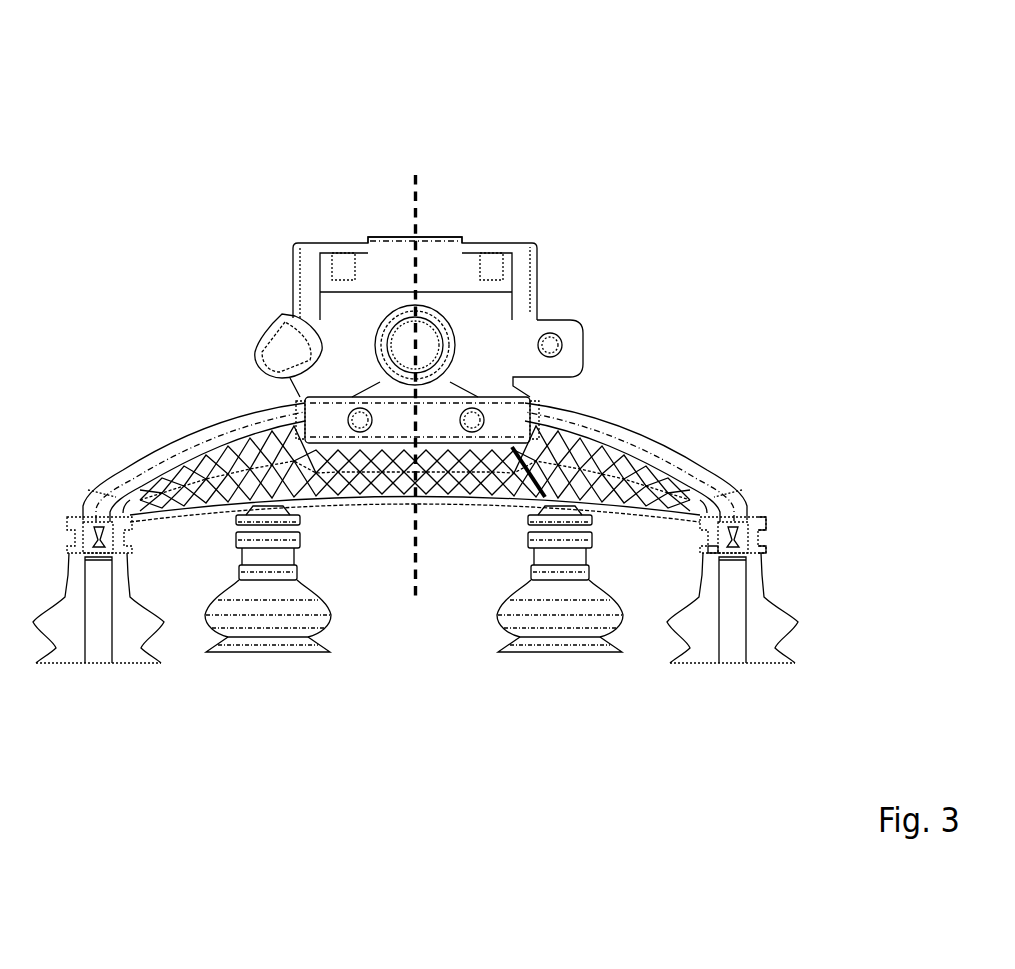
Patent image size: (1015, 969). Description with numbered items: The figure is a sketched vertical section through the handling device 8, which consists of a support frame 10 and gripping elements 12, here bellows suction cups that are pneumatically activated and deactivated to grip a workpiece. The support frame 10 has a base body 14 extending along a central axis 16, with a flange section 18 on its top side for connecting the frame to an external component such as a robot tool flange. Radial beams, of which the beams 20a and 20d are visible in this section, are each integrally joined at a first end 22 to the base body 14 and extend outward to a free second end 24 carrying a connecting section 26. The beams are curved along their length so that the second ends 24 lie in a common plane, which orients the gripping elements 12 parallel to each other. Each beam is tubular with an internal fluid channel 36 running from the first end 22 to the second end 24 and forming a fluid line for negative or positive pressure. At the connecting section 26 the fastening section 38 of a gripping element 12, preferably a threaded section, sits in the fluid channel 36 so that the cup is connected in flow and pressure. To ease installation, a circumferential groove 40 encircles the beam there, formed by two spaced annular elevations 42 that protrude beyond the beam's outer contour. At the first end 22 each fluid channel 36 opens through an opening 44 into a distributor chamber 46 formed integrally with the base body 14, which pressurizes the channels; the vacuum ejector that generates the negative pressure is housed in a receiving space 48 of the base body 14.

The handling device 8 is at (412, 124).
The support frame 10 is at (215, 270).
The gripping element 12 is at (795, 627).
The base body 14 is at (540, 283).
The central axis 16 is at (419, 193).
The flange section 18 is at (345, 217).
The radial beam 20a is at (130, 463).
The radial beam 20d is at (670, 445).
The first end 22 is at (538, 412).
The second end 24 is at (683, 556).
The connecting section 26 is at (852, 530).
The fluid channel 36 is at (200, 439).
The fastening section 38 is at (713, 545).
The circumferential groove 40 is at (758, 533).
The annular elevation 42 is at (760, 517).
The opening 44 is at (360, 432).
The distributor chamber 46 is at (305, 410).
The receiving space 48 is at (432, 340).